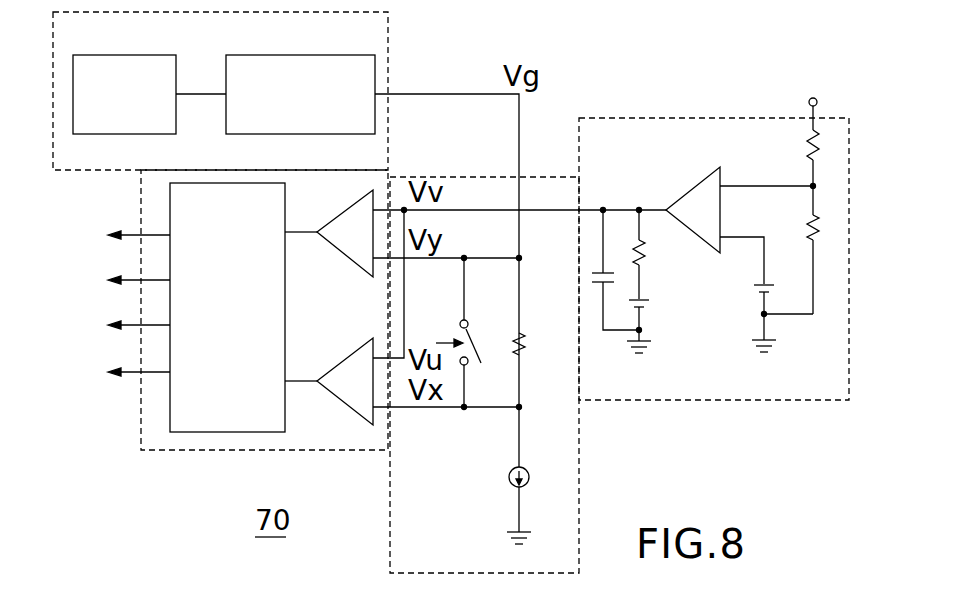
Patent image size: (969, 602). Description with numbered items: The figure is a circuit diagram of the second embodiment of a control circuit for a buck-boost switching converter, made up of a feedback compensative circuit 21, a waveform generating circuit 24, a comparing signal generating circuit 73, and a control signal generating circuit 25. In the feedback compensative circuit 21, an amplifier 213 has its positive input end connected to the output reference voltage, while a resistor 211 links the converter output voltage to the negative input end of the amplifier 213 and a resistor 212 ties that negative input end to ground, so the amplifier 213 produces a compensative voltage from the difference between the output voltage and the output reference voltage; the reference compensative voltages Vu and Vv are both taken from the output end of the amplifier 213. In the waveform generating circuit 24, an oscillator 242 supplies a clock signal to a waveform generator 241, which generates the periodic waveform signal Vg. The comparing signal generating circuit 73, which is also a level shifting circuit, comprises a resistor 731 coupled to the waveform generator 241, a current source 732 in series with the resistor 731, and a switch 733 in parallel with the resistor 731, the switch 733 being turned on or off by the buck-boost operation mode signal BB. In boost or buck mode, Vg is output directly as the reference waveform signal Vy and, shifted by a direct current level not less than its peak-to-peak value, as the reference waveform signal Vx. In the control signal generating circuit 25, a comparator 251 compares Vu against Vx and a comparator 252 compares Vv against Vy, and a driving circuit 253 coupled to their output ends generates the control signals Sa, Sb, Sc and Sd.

The waveform generating circuit 24 is at (388, 66).
The waveform generator 241 is at (330, 55).
The oscillator 242 is at (143, 55).
The control signal generating circuit 25 is at (215, 452).
The comparator 251 is at (330, 393).
The comparator 252 is at (328, 222).
The driving circuit 253 is at (287, 305).
The feedback compensative circuit 21 is at (610, 117).
The resistor 211 is at (813, 148).
The resistor 212 is at (818, 240).
The amplifier 213 is at (690, 183).
The comparing signal generating circuit 73 is at (579, 497).
The resistor 731 is at (521, 335).
The current source 732 is at (530, 468).
The switch 733 is at (472, 325).